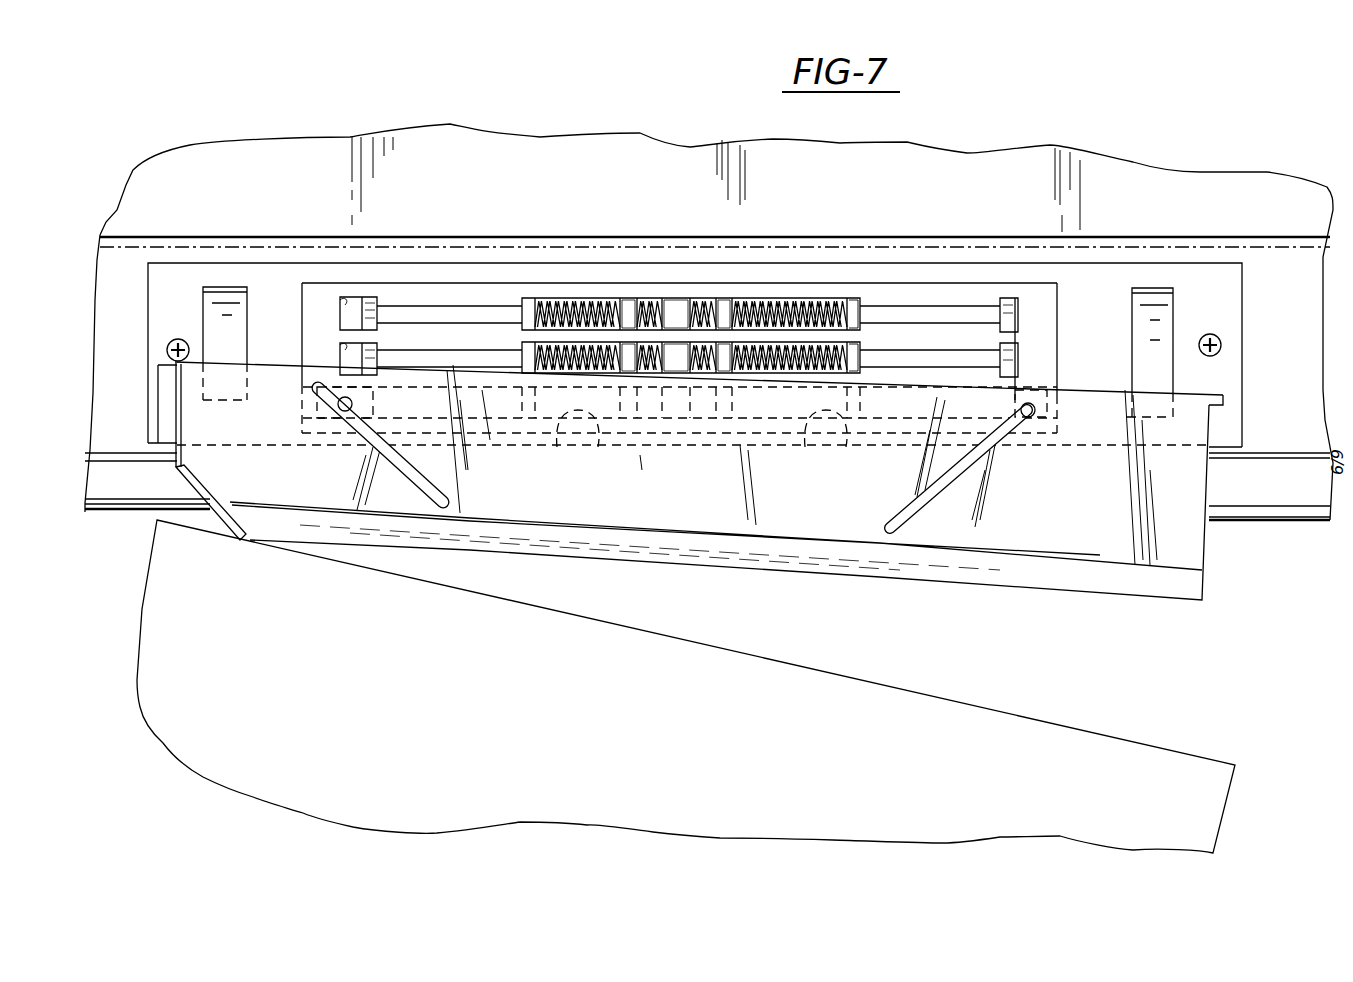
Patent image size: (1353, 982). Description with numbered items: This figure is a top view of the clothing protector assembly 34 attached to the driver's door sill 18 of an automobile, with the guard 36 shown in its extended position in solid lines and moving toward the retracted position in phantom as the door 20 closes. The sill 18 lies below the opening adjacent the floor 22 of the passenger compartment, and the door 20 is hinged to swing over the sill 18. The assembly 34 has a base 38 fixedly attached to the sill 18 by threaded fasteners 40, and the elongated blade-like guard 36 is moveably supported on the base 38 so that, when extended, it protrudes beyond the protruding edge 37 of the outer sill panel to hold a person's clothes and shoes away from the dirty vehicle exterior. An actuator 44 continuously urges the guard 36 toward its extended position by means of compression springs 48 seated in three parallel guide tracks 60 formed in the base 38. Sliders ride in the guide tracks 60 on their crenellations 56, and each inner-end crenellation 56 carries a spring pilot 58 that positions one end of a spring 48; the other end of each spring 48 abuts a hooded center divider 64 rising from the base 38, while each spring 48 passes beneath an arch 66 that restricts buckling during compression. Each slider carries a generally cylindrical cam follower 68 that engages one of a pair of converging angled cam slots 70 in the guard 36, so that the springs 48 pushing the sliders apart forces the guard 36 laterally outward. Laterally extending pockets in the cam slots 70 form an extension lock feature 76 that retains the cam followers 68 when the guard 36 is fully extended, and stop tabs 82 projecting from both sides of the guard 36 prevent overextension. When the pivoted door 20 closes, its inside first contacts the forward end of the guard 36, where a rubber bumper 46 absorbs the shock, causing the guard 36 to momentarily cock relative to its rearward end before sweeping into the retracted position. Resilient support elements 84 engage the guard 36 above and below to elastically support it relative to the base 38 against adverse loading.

The sill 18 is at (1318, 258).
The door 20 is at (1215, 768).
The floor 22 is at (968, 190).
The clothing protector assembly 34 is at (1180, 620).
The guard 36 is at (828, 585).
The protruding edge 37 is at (1270, 520).
The base 38 is at (1180, 261).
The threaded fasteners 40 is at (170, 350).
The actuator 44 is at (805, 290).
The rubber bumper 46 is at (215, 522).
The compression springs 48 is at (578, 298).
The crenellations 56 is at (378, 312).
The spring pilot 58 is at (558, 299).
The guide tracks 60 is at (345, 307).
The center divider 64 is at (680, 307).
The arch 66 is at (625, 303).
The cam follower 68 is at (347, 412).
The cam slots 70 is at (447, 508).
The extension lock feature 76 is at (300, 385).
The stop tabs 82 is at (158, 368).
The resilient support elements 84 is at (210, 312).